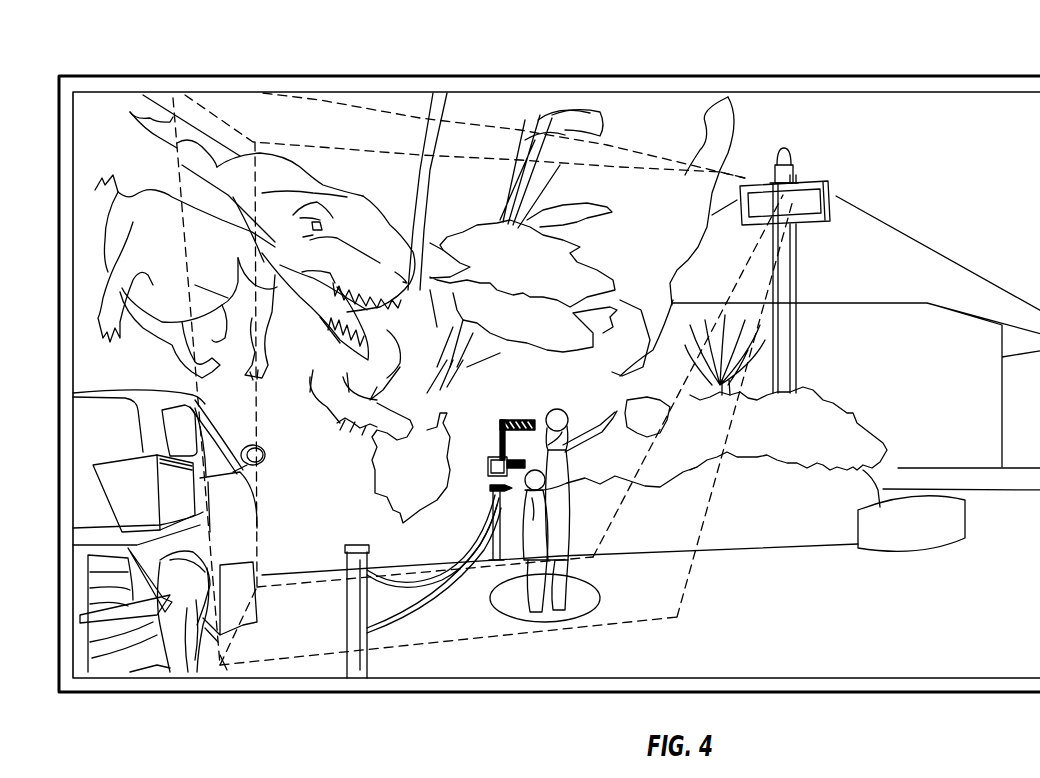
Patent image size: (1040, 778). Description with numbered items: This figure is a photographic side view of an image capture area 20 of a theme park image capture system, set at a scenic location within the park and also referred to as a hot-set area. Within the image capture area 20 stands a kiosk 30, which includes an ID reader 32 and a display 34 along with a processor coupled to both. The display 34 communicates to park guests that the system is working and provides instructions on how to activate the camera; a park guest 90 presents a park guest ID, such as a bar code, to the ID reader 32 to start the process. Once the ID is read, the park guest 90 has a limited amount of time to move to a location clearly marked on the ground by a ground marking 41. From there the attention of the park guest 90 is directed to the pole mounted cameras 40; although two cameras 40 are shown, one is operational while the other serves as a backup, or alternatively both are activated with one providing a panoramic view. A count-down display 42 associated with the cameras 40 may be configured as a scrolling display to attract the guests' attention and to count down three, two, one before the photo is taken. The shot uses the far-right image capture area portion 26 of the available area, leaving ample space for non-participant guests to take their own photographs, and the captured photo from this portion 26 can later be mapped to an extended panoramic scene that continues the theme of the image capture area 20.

The image capture area 20 is at (155, 84).
The image capture area portion 26 is at (255, 665).
The kiosk 30 is at (586, 477).
The ID reader 32 is at (490, 457).
The display 34 is at (507, 420).
The camera 40 is at (800, 213).
The ground marking 41 is at (532, 622).
The count-down display 42 is at (836, 196).
The park guest 90 is at (580, 397).